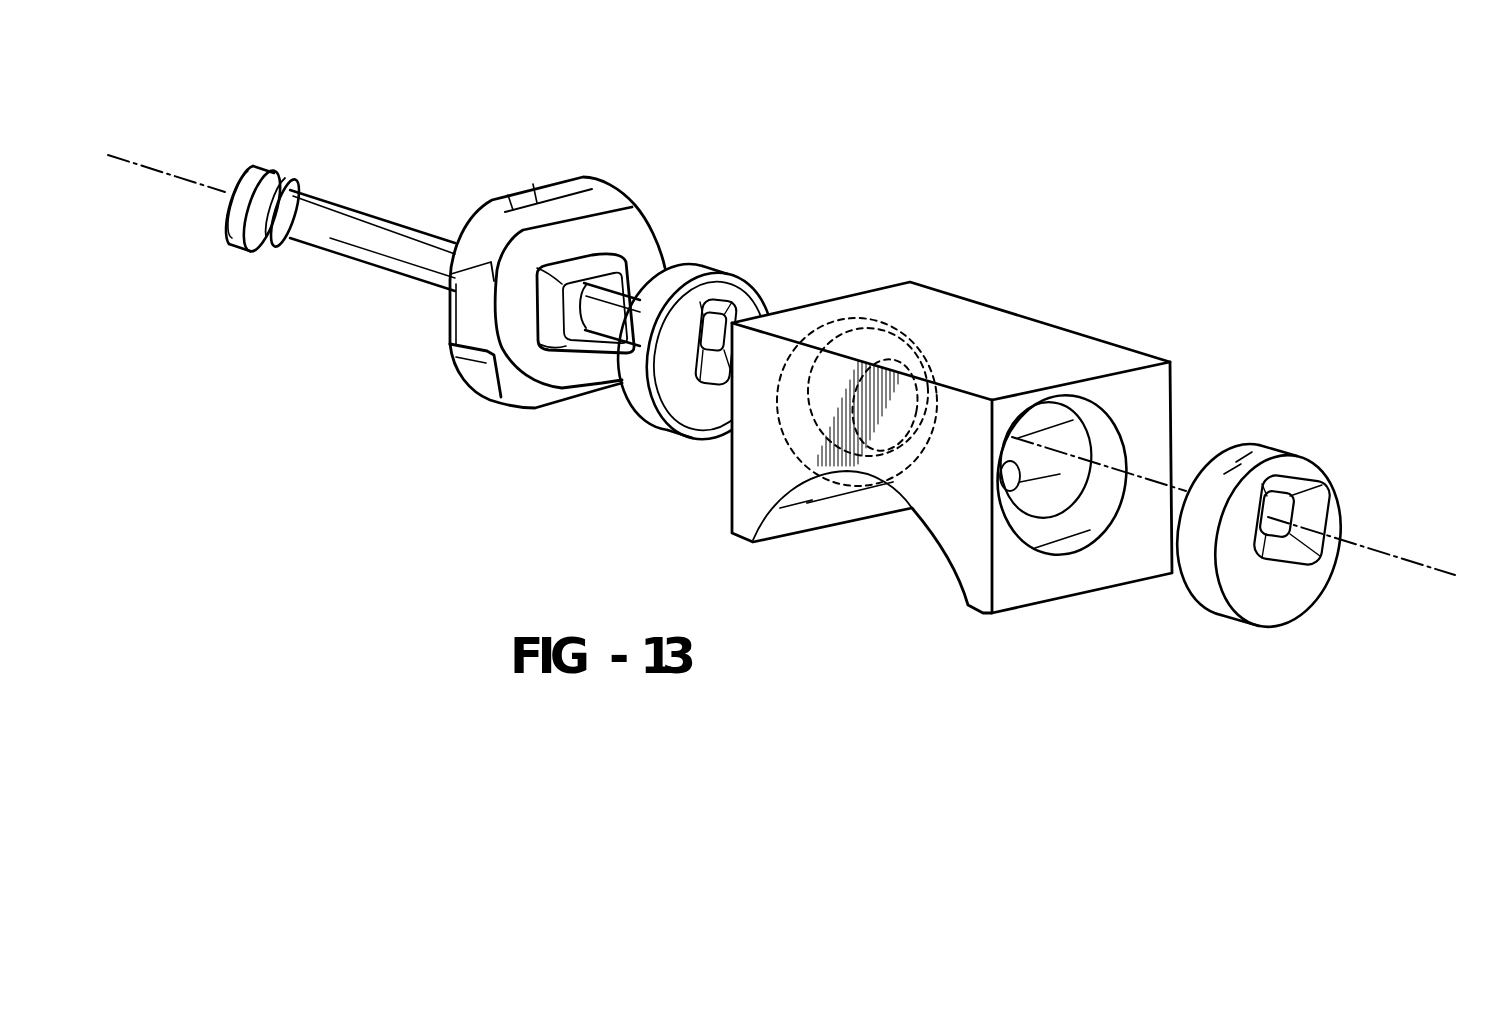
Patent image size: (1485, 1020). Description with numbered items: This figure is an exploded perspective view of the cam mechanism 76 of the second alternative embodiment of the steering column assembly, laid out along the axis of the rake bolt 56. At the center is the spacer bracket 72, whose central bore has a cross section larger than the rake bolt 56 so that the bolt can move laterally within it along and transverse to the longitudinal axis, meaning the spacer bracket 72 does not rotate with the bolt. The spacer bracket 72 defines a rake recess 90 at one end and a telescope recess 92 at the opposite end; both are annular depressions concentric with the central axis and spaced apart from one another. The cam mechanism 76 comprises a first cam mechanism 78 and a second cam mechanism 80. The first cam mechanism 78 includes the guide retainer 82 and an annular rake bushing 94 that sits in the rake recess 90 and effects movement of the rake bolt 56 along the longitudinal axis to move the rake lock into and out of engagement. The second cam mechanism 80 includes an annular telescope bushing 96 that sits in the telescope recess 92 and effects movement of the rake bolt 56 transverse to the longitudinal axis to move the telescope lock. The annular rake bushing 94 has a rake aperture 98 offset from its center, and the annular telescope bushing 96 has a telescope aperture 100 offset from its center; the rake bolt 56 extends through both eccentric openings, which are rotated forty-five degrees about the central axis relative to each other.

The rake bolt 56 is at (263, 163).
The spacer bracket 72 is at (1032, 316).
The cam mechanism 76 is at (1200, 167).
The first cam mechanism 78 is at (702, 256).
The second cam mechanism 80 is at (1299, 454).
The guide retainer 82 is at (545, 187).
The rake recess 90 is at (779, 403).
The telescope recess 92 is at (1103, 433).
The annular rake bushing 94 is at (730, 283).
The annular telescope bushing 96 is at (1232, 607).
The rake aperture 98 is at (712, 356).
The telescope aperture 100 is at (1307, 513).